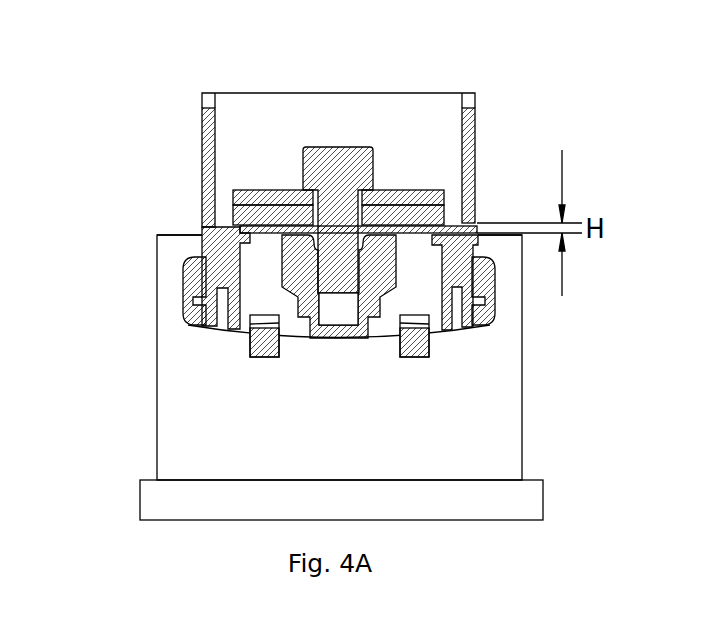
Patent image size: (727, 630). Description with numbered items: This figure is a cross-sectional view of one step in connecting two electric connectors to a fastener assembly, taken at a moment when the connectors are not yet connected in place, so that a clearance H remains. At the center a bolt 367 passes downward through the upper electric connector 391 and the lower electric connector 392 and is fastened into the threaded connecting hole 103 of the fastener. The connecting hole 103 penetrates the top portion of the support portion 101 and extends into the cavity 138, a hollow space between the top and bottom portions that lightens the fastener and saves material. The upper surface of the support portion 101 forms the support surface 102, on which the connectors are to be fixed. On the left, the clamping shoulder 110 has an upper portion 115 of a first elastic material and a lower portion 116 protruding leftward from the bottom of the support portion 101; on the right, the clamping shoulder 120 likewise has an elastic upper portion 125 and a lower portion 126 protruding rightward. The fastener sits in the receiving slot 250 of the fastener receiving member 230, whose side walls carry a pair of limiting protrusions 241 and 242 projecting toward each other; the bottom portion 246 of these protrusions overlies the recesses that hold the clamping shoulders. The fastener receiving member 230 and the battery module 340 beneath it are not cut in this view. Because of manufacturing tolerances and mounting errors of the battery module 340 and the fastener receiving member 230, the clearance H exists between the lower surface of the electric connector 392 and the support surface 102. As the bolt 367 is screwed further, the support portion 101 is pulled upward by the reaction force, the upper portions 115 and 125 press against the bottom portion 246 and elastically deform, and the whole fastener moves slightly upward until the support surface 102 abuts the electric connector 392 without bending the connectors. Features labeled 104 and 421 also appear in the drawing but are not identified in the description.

The support portion 101 is at (192, 266).
The support surface 102 is at (243, 233).
The connecting hole 103 is at (340, 305).
The support blocks 104 is at (265, 347).
The clamping shoulder 110 is at (205, 300).
The upper portion 115 is at (196, 288).
The lower portion 116 is at (200, 326).
The clamping shoulder 120 is at (490, 304).
The upper portion 125 is at (490, 280).
The lower portion 126 is at (483, 314).
The cavity 138 is at (420, 253).
The fastener receiving member 230 is at (493, 449).
The limiting protrusion 241 is at (190, 242).
The limiting protrusion 242 is at (480, 246).
The bottom portion 246 is at (202, 258).
The receiving slot 250 is at (212, 325).
The battery module 340 is at (500, 504).
The bolt 367 is at (340, 148).
The electric connector 391 is at (260, 196).
The electric connector 392 is at (242, 213).
The central body 421 is at (370, 294).